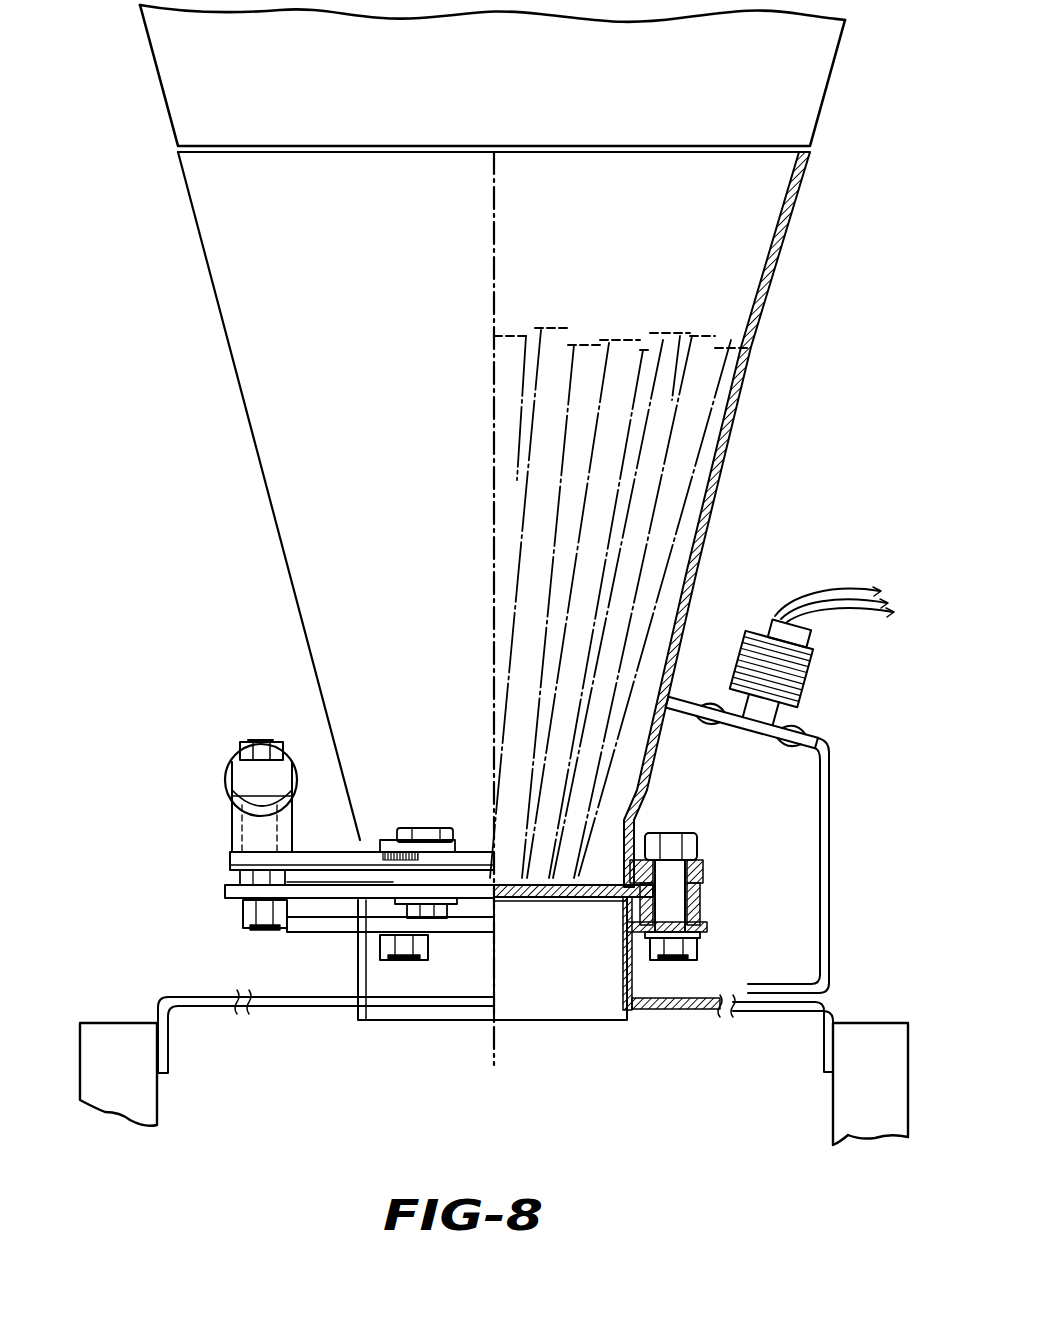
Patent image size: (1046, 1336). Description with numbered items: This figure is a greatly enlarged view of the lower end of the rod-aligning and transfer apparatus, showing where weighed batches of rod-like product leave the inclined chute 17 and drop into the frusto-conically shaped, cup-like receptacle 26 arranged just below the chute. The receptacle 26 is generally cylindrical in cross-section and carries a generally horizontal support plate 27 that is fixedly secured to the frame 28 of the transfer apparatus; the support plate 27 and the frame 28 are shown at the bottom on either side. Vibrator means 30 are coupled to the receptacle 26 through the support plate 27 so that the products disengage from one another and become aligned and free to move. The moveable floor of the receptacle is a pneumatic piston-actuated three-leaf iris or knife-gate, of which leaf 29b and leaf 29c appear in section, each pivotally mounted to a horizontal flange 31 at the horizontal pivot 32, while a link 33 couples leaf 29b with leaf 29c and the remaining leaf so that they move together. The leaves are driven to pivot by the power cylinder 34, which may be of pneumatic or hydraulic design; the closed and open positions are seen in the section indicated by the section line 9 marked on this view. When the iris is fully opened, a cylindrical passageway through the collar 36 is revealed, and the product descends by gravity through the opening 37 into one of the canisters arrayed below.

The inclined chute 17 is at (492, 78).
The receptacle 26 is at (697, 588).
The support plate 27 is at (305, 1007).
The frame 28 is at (133, 1127).
The leaf 29b is at (627, 823).
The leaf 29c is at (225, 887).
The vibrator means 30 is at (816, 725).
The horizontal flange 31 is at (312, 933).
The horizontal pivot 32 is at (720, 838).
The link 33 is at (468, 850).
The power cylinder 34 is at (228, 792).
The collar 36 is at (358, 970).
The opening 37 is at (623, 987).
The section line 9- 9 is at (320, 852).